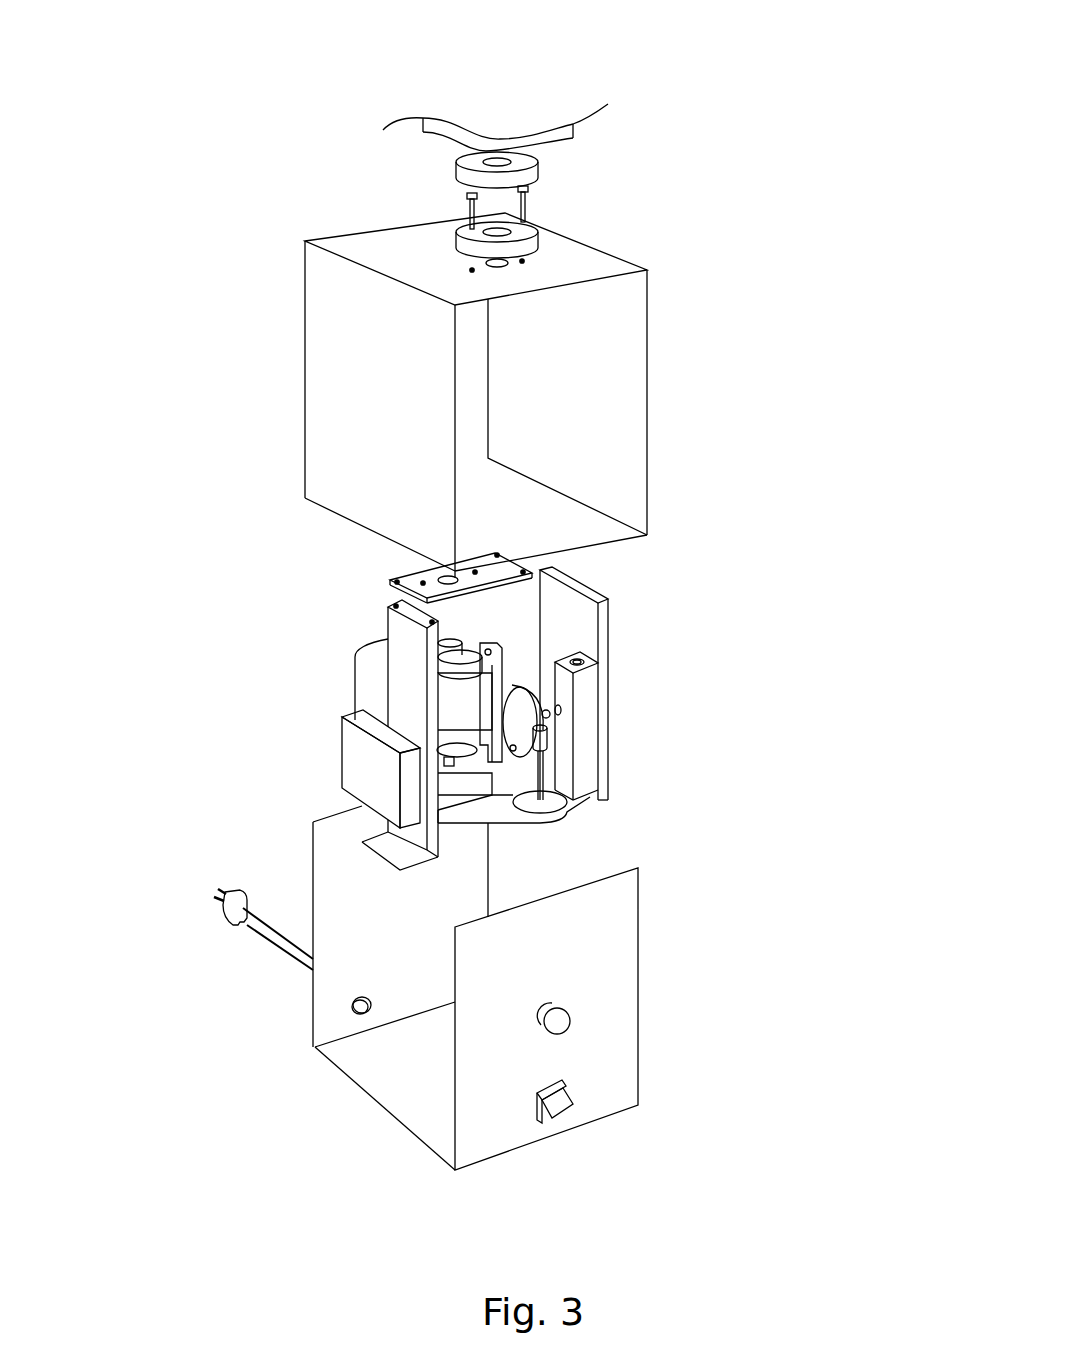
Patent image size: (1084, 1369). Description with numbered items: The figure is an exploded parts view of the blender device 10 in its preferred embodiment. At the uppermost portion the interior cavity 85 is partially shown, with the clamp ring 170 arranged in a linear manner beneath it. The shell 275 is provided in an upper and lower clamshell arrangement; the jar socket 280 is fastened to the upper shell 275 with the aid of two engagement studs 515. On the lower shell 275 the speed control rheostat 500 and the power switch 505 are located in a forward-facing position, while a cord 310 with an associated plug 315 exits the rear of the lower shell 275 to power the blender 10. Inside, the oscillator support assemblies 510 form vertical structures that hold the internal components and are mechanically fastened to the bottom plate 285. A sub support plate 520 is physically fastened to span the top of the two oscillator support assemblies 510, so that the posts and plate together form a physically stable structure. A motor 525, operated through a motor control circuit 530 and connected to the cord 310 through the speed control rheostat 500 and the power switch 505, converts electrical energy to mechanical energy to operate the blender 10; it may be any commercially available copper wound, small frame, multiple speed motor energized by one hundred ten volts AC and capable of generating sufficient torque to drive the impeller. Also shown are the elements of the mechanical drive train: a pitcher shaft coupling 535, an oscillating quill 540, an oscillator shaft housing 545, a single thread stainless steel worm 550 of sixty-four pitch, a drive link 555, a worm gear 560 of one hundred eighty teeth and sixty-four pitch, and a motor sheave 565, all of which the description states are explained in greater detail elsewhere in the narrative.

The device 10 is at (265, 130).
The interior cavity 85 is at (553, 131).
The clamp ring 170 is at (548, 163).
The engagement studs 515 is at (533, 196).
The jar socket 280 is at (545, 233).
The shell 275 is at (653, 268).
The sub support plate 520 is at (533, 568).
The oscillator support assemblies 510 is at (387, 606).
The motor 525 is at (353, 656).
The motor control circuit 530 is at (343, 718).
The drive link 555 is at (486, 655).
The pitcher shaft coupling 535 is at (479, 640).
The oscillating quill 540 is at (482, 658).
The oscillator shaft housing 545 is at (576, 712).
The worm gear 560 is at (592, 658).
The worm 550 is at (548, 739).
The motor sheave 565 is at (572, 809).
The bottom plate 285 is at (398, 1052).
The speed control rheostat 500 is at (575, 1010).
The power switch 505 is at (575, 1092).
The plug 315 is at (222, 888).
The cord 310 is at (285, 943).